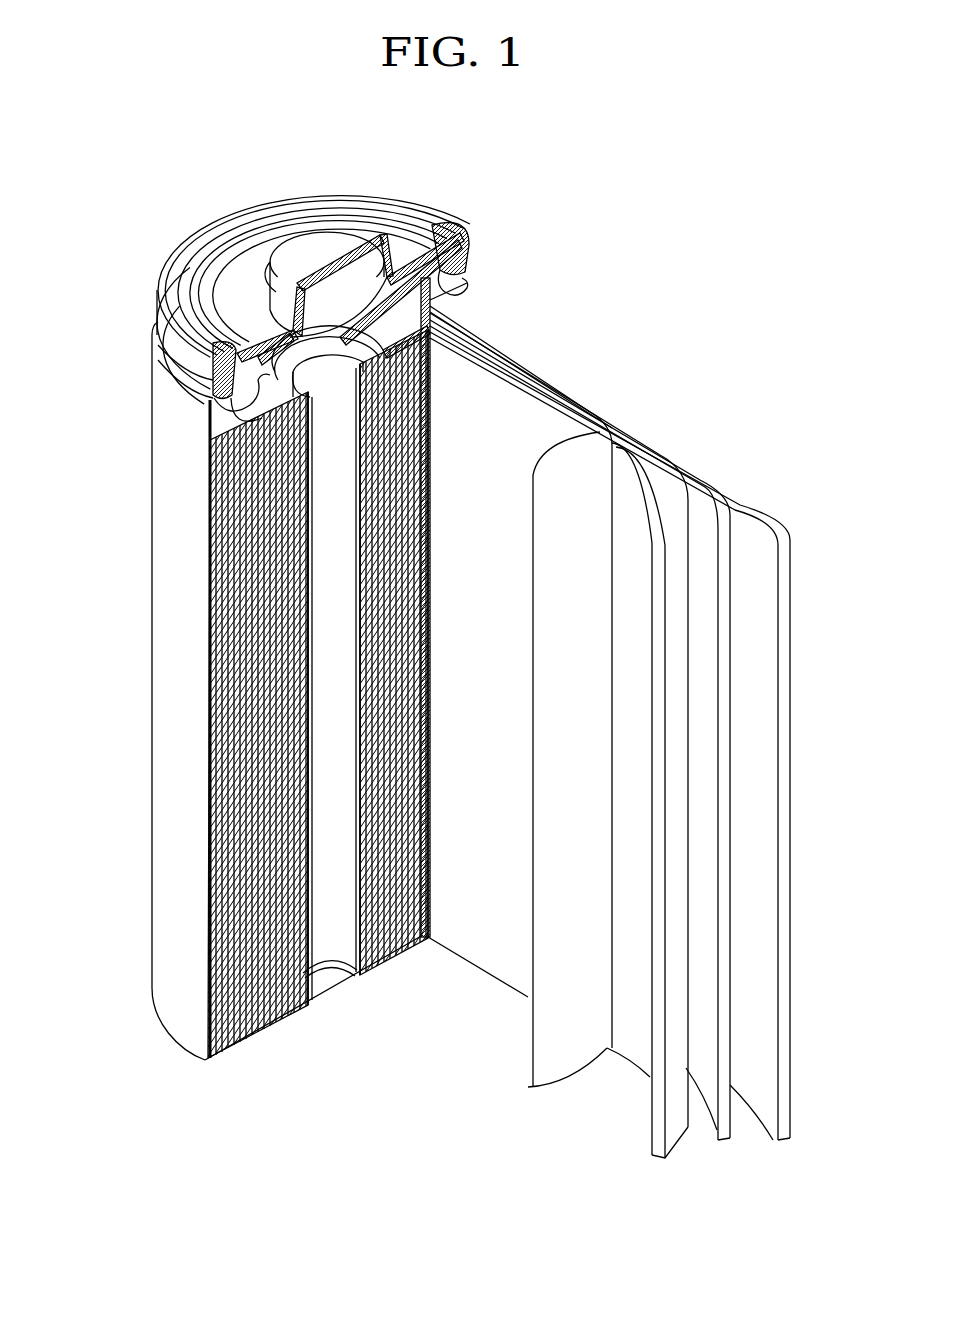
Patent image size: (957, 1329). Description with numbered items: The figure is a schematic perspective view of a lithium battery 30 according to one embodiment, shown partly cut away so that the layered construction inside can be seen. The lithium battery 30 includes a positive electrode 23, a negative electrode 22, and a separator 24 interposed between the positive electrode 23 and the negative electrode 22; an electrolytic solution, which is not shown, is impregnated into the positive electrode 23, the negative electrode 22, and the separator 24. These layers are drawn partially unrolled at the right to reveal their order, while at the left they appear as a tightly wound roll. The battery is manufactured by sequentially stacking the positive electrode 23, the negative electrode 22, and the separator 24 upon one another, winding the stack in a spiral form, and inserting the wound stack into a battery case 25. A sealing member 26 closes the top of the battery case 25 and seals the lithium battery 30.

The lithium battery 30 is at (437, 138).
The battery case 25 is at (160, 657).
The sealing member 26 is at (320, 245).
The separator 24 is at (541, 384).
The positive electrode 23 is at (629, 440).
The negative electrode 22 is at (762, 490).